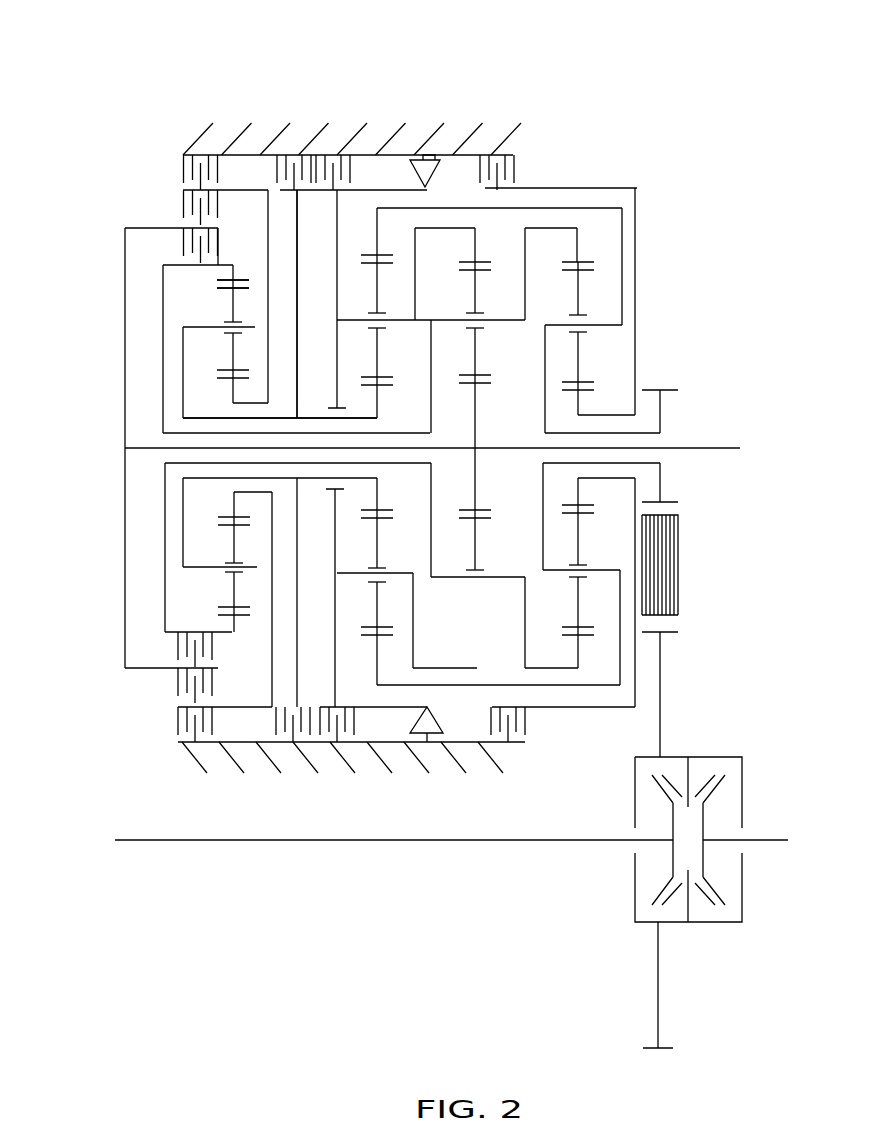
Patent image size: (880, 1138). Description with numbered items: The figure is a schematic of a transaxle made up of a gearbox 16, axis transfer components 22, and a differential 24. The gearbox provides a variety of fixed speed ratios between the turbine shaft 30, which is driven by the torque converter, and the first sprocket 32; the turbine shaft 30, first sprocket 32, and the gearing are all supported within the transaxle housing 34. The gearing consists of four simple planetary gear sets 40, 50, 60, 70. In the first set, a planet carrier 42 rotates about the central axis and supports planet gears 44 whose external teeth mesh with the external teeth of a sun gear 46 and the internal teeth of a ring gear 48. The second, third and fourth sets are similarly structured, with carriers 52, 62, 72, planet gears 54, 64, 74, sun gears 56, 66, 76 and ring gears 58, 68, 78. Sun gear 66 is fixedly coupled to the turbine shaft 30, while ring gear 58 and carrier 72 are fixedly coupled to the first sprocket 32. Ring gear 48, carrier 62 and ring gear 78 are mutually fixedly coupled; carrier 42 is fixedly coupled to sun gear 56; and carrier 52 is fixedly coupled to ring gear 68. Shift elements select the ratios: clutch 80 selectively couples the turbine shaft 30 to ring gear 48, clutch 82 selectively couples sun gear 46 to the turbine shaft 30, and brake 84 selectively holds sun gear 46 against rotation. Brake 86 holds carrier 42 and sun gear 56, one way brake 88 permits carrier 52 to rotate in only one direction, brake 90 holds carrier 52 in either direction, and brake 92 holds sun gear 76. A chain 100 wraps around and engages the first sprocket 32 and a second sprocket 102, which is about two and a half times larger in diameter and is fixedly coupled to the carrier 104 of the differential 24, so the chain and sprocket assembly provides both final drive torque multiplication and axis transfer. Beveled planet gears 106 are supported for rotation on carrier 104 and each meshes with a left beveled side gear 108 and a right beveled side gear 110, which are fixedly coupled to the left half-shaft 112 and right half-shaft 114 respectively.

The gearbox 16 is at (652, 98).
The axis transfer components 22 is at (748, 598).
The differential 24 is at (635, 940).
The turbine shaft 30 is at (707, 448).
The first sprocket 32 is at (668, 390).
The transaxle housing 34 is at (503, 140).
The planetary gear set 40 is at (247, 583).
The planet carrier 42 is at (182, 347).
The planet gears 44 is at (232, 307).
The sun gear 46 is at (237, 397).
The ring gear 48 is at (233, 275).
The planetary gear set 50 is at (392, 617).
The carrier 52 is at (337, 280).
The planet gears 54 is at (380, 295).
The sun gear 56 is at (378, 413).
The ring gear 58 is at (373, 237).
The planetary gear set 60 is at (497, 607).
The carrier 62 is at (523, 245).
The planet gears 64 is at (480, 300).
The sun gear 66 is at (477, 430).
The ring gear 68 is at (470, 247).
The planetary gear set 70 is at (593, 603).
The carrier 72 is at (545, 385).
The planet gears 74 is at (580, 300).
The sun gear 76 is at (580, 403).
The ring gear 78 is at (572, 243).
The clutch 80 is at (182, 242).
The clutch 82 is at (183, 210).
The brake 84 is at (183, 165).
The brake 86 is at (277, 170).
The one way brake 88 is at (442, 173).
The brake 90 is at (353, 173).
The brake 92 is at (518, 168).
The chain 100 is at (680, 530).
The second sprocket 102 is at (660, 640).
The carrier 104 is at (635, 872).
The beveled planet gears 106 is at (703, 783).
The left beveled side gear 108 is at (663, 787).
The right beveled side gear 110 is at (705, 827).
The left half-shaft 112 is at (443, 840).
The right half-shaft 114 is at (778, 840).